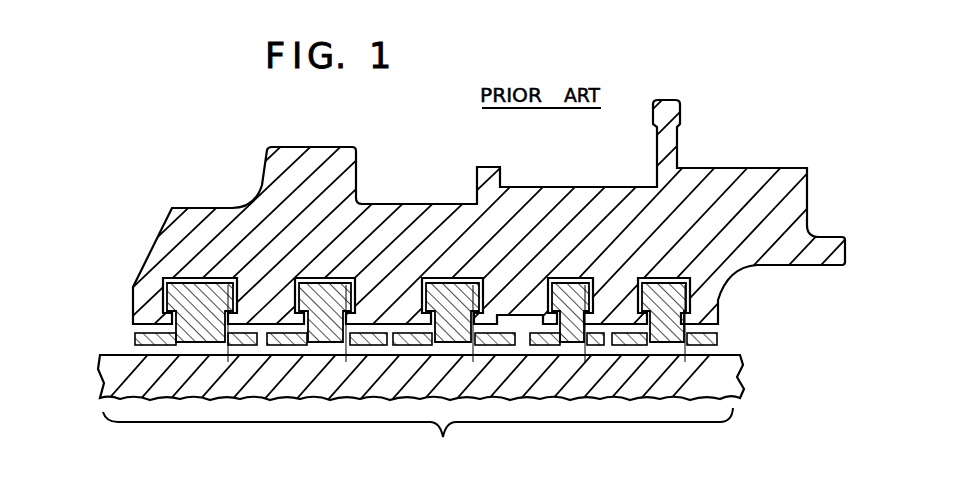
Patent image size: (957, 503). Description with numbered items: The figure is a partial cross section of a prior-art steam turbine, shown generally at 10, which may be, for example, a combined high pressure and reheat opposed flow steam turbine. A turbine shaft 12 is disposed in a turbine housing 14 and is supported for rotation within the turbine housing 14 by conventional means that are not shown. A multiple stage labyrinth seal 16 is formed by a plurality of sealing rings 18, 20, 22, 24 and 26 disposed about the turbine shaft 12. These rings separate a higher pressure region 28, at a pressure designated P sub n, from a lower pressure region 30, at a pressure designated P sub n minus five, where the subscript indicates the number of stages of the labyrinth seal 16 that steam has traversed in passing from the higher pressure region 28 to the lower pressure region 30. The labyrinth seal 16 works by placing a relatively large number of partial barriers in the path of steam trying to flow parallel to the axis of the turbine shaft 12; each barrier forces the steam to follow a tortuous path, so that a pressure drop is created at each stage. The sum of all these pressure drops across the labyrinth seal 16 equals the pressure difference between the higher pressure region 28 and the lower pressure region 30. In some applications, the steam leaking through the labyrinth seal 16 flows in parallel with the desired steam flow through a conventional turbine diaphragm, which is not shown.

The portion of a prior-art steam turbine 10 is at (730, 122).
The turbine shaft 12 is at (745, 388).
The turbine housing 14 is at (762, 185).
The multiple stage labyrinth seal 16 is at (447, 443).
The sealing ring 18 is at (197, 300).
The sealing ring 20 is at (345, 300).
The sealing ring 22 is at (452, 298).
The sealing ring 24 is at (572, 296).
The sealing ring 26 is at (675, 298).
The higher pressure region 28 is at (105, 297).
The lower pressure region 30 is at (735, 296).